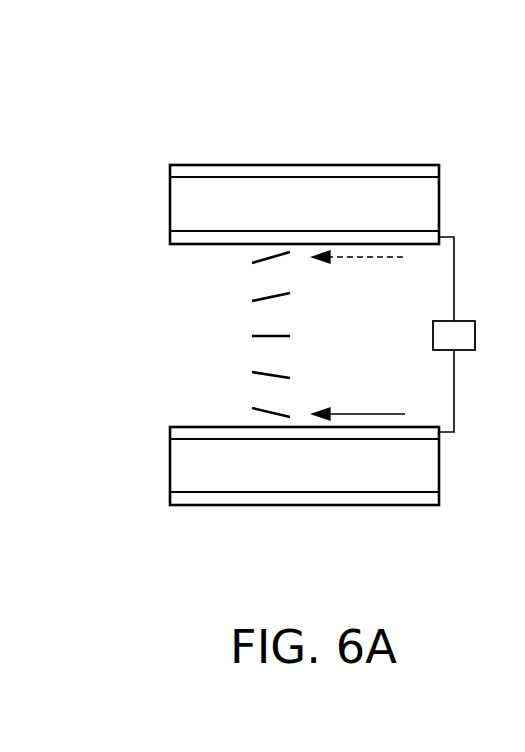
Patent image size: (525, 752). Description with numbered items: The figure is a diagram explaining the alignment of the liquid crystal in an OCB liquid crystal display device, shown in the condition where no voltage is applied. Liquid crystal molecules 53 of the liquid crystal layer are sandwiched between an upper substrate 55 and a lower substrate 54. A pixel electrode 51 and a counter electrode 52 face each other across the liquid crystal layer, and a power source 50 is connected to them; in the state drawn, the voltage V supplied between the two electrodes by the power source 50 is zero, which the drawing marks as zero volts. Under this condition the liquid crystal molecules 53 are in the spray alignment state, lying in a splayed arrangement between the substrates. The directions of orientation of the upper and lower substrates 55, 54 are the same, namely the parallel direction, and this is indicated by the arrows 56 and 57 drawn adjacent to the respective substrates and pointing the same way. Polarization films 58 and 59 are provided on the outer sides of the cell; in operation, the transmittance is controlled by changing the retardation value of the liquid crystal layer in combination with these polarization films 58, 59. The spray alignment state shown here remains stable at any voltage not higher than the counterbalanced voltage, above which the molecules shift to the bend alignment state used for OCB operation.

The power source 50 is at (467, 350).
The pixel electrode 51 is at (193, 425).
The counter electrode 52 is at (190, 245).
The liquid crystal molecules 53 is at (268, 336).
The lower substrate 54 is at (177, 468).
The upper substrate 55 is at (175, 205).
The arrow 56 is at (372, 410).
The arrow 57 is at (368, 258).
The polarization film 58 is at (210, 505).
The polarization film 59 is at (207, 170).